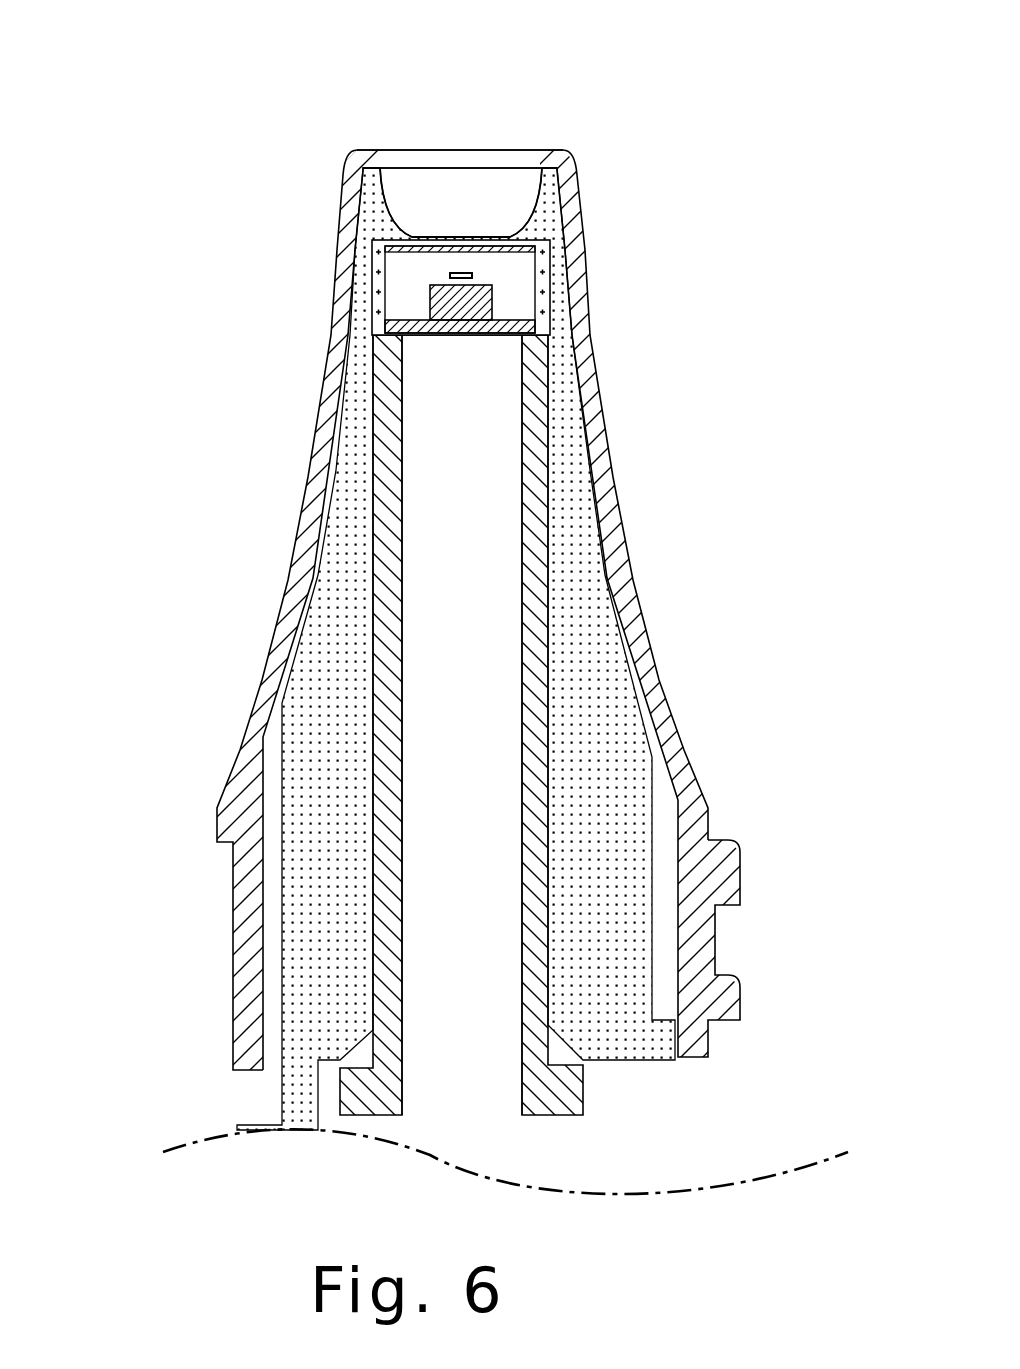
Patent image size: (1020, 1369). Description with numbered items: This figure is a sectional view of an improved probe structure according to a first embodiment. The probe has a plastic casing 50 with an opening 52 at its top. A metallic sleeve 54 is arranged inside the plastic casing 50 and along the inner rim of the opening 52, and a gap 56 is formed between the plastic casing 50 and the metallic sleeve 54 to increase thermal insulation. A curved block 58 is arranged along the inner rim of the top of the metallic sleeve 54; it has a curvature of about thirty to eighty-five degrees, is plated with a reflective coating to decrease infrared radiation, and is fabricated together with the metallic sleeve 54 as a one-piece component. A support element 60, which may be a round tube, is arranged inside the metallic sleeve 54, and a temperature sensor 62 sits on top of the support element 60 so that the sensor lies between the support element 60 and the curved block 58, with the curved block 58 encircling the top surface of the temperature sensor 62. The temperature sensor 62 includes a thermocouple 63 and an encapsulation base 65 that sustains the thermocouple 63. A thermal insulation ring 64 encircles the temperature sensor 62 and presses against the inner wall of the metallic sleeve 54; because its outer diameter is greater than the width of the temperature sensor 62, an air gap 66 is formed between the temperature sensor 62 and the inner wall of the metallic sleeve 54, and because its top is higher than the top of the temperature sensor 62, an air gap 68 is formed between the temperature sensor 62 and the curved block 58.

The plastic casing 50 is at (310, 455).
The opening 52 is at (488, 134).
The metallic sleeve 54 is at (627, 1018).
The gap 56 is at (273, 762).
The curved block 58 is at (398, 188).
The support element 60 is at (527, 532).
The temperature sensor 62 is at (418, 362).
The thermocouple 63 is at (450, 275).
The thermal insulation ring 64 is at (543, 279).
The encapsulation base 65 is at (378, 333).
The air gap 66 is at (543, 316).
The air gap 68 is at (518, 241).